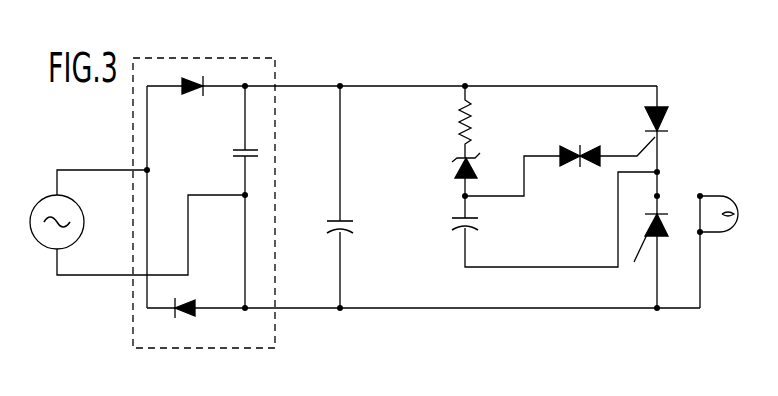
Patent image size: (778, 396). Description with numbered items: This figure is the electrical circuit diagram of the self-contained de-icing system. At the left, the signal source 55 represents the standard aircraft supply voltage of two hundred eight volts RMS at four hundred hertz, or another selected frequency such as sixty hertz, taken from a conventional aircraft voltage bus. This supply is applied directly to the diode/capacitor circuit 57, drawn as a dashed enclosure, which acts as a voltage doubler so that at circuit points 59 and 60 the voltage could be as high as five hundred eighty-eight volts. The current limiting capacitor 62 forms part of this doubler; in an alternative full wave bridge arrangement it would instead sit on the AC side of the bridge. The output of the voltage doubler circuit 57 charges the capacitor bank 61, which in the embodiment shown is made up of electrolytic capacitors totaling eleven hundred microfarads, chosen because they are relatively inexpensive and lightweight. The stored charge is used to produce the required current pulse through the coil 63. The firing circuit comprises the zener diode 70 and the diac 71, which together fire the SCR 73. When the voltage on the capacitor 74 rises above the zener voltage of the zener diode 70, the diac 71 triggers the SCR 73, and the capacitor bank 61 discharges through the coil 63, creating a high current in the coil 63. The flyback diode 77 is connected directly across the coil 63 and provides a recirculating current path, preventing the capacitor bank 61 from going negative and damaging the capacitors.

The signal source 55 is at (83, 226).
The diode/capacitor circuit 57 is at (275, 58).
The circuit point 59 is at (186, 94).
The circuit point 60 is at (188, 312).
The capacitor bank 61 is at (355, 220).
The current limiting capacitor 62 is at (252, 158).
The coil 63 is at (728, 196).
The zener diode 70 is at (458, 167).
The diac 71 is at (580, 146).
The SCR 73 is at (665, 107).
The capacitor 74 is at (458, 219).
The flyback diode 77 is at (643, 254).